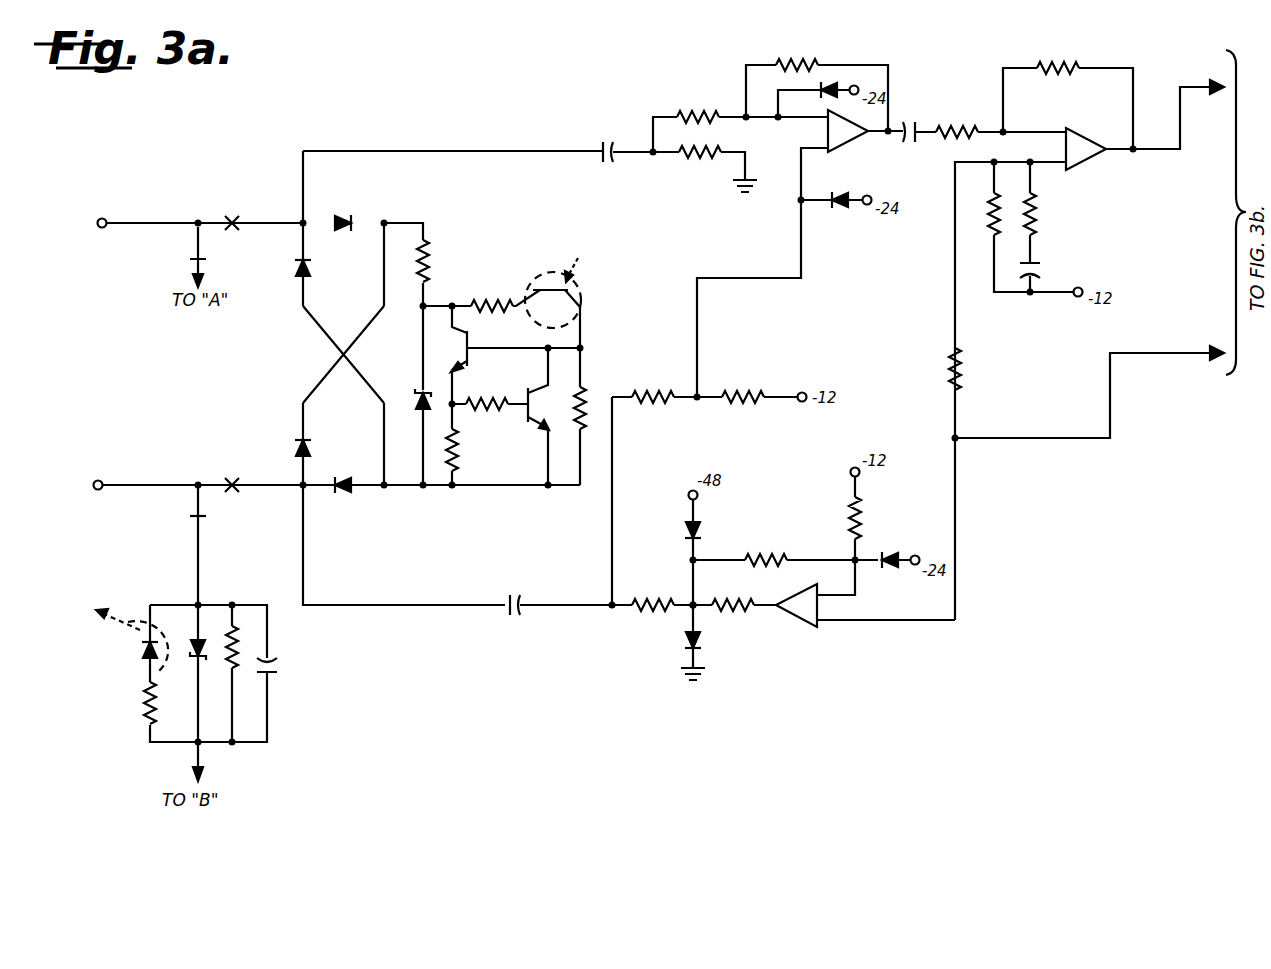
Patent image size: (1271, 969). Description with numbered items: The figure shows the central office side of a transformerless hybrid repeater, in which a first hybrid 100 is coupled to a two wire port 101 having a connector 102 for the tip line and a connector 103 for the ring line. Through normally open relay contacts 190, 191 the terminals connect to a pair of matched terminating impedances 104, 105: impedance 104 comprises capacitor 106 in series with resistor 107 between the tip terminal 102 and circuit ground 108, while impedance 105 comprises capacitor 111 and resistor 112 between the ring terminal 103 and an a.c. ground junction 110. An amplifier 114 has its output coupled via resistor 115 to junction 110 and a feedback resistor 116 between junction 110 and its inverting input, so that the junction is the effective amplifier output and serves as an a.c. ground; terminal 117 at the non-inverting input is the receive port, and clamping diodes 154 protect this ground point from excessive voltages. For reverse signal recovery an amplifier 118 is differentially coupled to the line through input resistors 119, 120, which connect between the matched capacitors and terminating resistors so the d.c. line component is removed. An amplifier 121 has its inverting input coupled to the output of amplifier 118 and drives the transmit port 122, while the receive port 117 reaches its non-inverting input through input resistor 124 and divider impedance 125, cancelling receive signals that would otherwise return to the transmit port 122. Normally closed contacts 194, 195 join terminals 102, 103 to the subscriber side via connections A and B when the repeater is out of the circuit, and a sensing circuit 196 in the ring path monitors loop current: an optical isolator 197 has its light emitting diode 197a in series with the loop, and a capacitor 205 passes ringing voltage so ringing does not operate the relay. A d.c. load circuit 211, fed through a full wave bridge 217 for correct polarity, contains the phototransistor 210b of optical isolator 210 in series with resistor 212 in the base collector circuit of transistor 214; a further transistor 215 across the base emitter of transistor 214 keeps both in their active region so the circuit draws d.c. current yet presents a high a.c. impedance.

The first hybrid 100 is at (866, 318).
The two wire port 101 is at (116, 372).
The connector for a tip line 102 is at (100, 229).
The connector for a ring line 103 is at (96, 492).
The terminating impedance 104 is at (686, 161).
The terminating impedance 105 is at (628, 646).
The capacitor 106 is at (606, 140).
The resistor 107 is at (705, 165).
The circuit ground 108 is at (740, 194).
The a.c. ground junction 110 is at (698, 608).
The capacitor 111 is at (516, 590).
The resistor 112 is at (640, 612).
The amplifier 114 is at (795, 632).
The resistor 115 is at (718, 606).
The feedback resistor 116 is at (762, 556).
The terminal (receive port) 117 is at (1182, 332).
The amplifier 118 is at (860, 148).
The input resistor 119 is at (688, 112).
The input resistor 120 is at (655, 390).
The amplifier 121 is at (1090, 166).
The transmit port 122 is at (1186, 82).
The input resistor 124 is at (963, 366).
The divider impedance 125 is at (1044, 269).
The clamping diodes 154 is at (685, 532).
The normally open relay contacts 190 is at (234, 212).
The normally open relay contacts 191 is at (232, 476).
The normally closed contacts 194 is at (188, 260).
The normally closed contacts 195 is at (190, 517).
The sensing circuit 196 is at (272, 664).
The optical isolator 197 is at (148, 679).
The light emitting diode 197a is at (140, 646).
The capacitor 205 is at (278, 673).
The optical isolator 210 is at (583, 290).
The phototransistor 210b is at (546, 290).
The d.c. load circuit 211 is at (452, 258).
The resistor 212 is at (497, 300).
The transistor 214 is at (470, 348).
The transistor 215 is at (531, 420).
The full wave bridge 217 is at (346, 310).